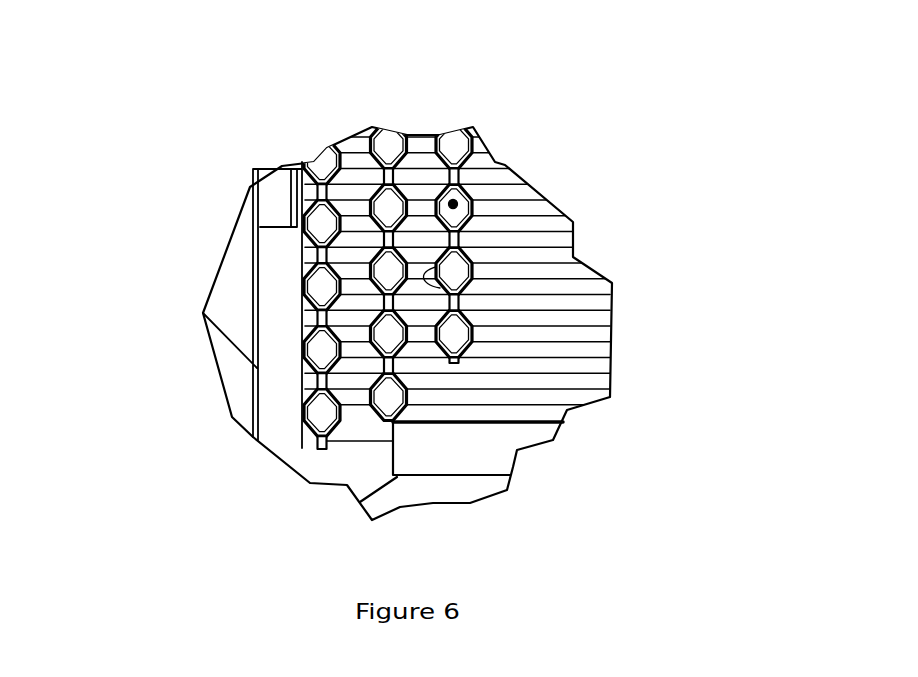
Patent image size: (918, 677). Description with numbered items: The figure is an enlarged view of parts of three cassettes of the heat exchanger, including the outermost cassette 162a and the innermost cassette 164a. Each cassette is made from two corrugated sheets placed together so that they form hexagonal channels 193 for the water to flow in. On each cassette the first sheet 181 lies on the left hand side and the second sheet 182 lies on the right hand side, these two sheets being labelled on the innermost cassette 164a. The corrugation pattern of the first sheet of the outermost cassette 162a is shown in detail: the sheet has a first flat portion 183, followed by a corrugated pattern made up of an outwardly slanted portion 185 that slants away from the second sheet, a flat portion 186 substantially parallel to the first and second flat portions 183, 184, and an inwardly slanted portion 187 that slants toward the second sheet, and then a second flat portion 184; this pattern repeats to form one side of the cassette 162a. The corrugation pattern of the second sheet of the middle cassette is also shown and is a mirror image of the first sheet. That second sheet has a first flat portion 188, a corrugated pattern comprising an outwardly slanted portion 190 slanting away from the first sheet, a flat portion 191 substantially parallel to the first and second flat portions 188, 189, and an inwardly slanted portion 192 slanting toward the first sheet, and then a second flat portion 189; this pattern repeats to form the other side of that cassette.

The outermost cassette 162a is at (318, 149).
The innermost cassette 164a is at (456, 122).
The first sheet 181 is at (473, 283).
The second sheet 182 is at (520, 207).
The first flat portion 183 is at (300, 268).
The second flat portion 184 is at (255, 325).
The outwardly slanted portion 185 is at (300, 268).
The flat portion 186 is at (303, 297).
The inwardly slanted portion 187 is at (303, 323).
The first flat portion 188 is at (395, 296).
The second flat portion 189 is at (415, 360).
The outwardly slanted portion 190 is at (430, 322).
The flat portion 191 is at (425, 337).
The inwardly slanted portion 192 is at (420, 350).
The hexagonal channels 193 is at (456, 201).